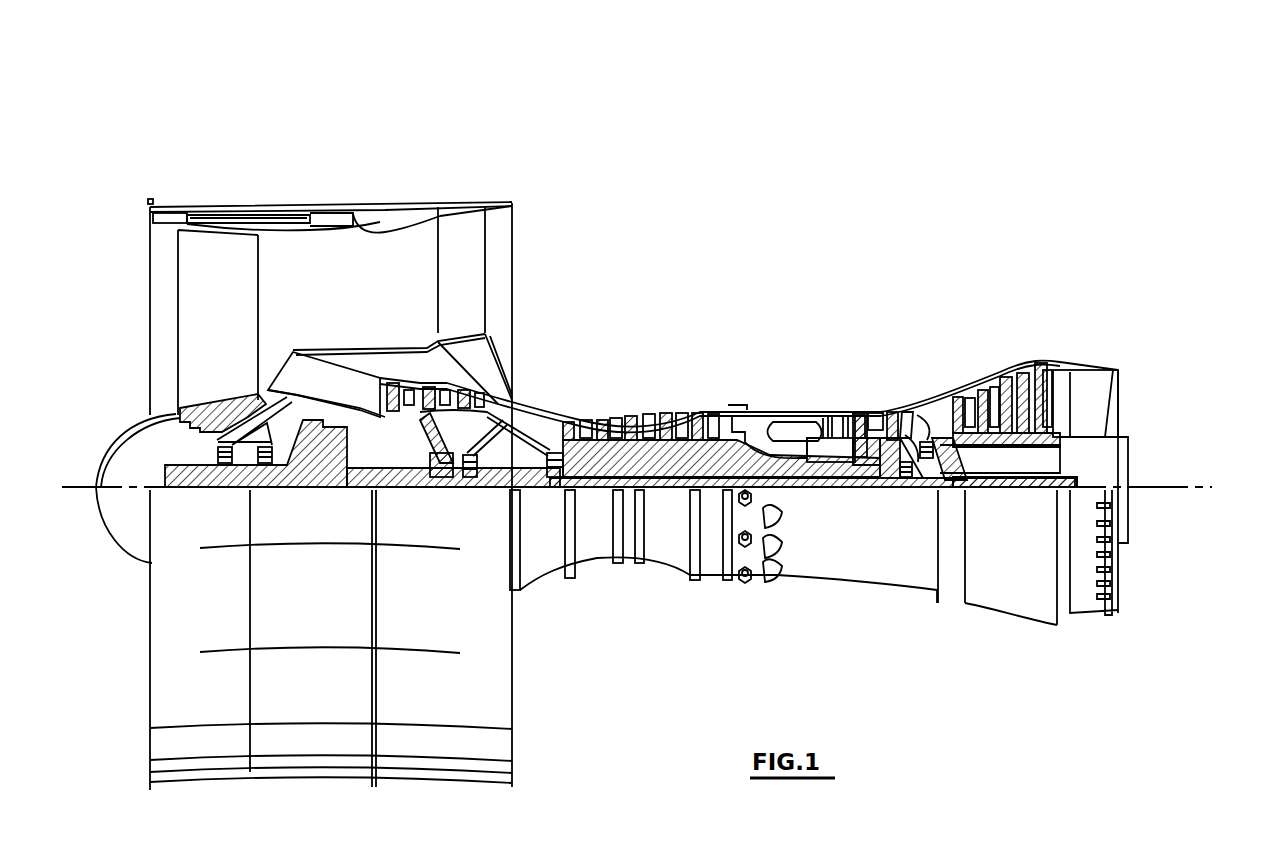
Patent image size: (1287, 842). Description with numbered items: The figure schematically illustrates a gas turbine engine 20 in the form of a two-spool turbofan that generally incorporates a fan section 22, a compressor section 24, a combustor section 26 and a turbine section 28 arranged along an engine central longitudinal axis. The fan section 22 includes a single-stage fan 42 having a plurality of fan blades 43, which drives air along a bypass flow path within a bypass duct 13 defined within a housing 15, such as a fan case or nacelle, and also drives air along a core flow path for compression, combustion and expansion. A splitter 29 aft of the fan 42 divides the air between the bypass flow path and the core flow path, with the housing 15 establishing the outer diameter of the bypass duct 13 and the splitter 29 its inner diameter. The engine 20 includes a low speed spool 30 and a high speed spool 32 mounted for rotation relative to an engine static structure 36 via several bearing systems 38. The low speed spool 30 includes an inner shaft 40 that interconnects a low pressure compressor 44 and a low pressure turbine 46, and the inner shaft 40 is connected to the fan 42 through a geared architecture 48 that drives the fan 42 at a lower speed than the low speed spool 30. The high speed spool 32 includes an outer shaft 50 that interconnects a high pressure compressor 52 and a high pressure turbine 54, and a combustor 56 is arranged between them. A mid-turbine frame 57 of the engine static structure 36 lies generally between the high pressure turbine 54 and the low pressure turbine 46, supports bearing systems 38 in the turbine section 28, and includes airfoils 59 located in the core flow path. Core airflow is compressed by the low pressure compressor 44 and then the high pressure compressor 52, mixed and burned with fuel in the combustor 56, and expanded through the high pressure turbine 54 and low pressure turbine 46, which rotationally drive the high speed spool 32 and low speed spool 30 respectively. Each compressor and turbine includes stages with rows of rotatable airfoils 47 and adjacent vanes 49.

The bypass duct 13 is at (385, 232).
The housing 15 is at (330, 209).
The gas turbine engine 20 is at (787, 260).
The fan section 22 is at (258, 200).
The compressor section 24 is at (560, 396).
The combustor section 26 is at (783, 386).
The turbine section 28 is at (958, 350).
The splitter 29 is at (310, 375).
The low speed spool 30 is at (667, 493).
The high speed spool 32 is at (706, 462).
The engine static structure 36 is at (708, 583).
The bearing systems 38 is at (472, 488).
The inner shaft 40 is at (536, 494).
The fan 42 is at (233, 334).
The fan blades 43 is at (248, 336).
The low pressure compressor 44 is at (433, 398).
The low pressure turbine 46 is at (998, 388).
The rotatable airfoils 47 is at (390, 395).
The geared architecture 48 is at (338, 488).
The vanes 49 is at (412, 395).
The outer shaft 50 is at (786, 470).
The high pressure compressor 52 is at (645, 440).
The high pressure turbine 54 is at (868, 420).
The combustor 56 is at (785, 430).
The mid-turbine frame 57 is at (917, 397).
The airfoils 59 is at (940, 456).